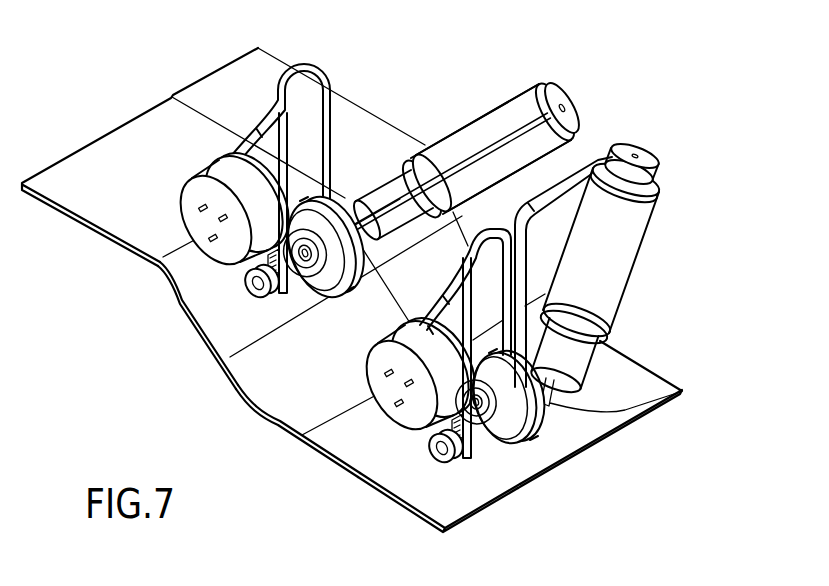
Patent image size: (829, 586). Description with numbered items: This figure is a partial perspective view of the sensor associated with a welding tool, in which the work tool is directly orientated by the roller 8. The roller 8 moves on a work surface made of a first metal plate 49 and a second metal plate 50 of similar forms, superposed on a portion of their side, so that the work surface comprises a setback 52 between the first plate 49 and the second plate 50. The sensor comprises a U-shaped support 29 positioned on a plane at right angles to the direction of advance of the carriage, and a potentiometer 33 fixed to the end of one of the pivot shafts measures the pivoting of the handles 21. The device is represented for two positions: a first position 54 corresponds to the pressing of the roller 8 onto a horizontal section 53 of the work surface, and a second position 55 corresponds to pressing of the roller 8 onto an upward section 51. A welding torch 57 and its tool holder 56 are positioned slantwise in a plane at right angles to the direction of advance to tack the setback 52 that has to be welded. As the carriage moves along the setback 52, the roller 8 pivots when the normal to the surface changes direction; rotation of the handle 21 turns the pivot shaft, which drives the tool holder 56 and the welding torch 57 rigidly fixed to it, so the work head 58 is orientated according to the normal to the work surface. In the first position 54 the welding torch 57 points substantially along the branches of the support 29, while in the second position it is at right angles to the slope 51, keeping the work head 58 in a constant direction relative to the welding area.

The roller 8 is at (326, 300).
The handle 21 is at (301, 273).
The U-shaped support 29 is at (312, 64).
The potentiometer 33 is at (383, 407).
The first metal plate 49 is at (455, 503).
The second metal plate 50 is at (643, 380).
The upward section 51 is at (205, 300).
The setback 52 is at (583, 440).
The horizontal section 53 is at (385, 465).
The first position 54 is at (682, 160).
The second position 55 is at (582, 80).
The tool holder 56 is at (600, 160).
The welding torch 57 is at (608, 262).
The work head 58 is at (640, 405).